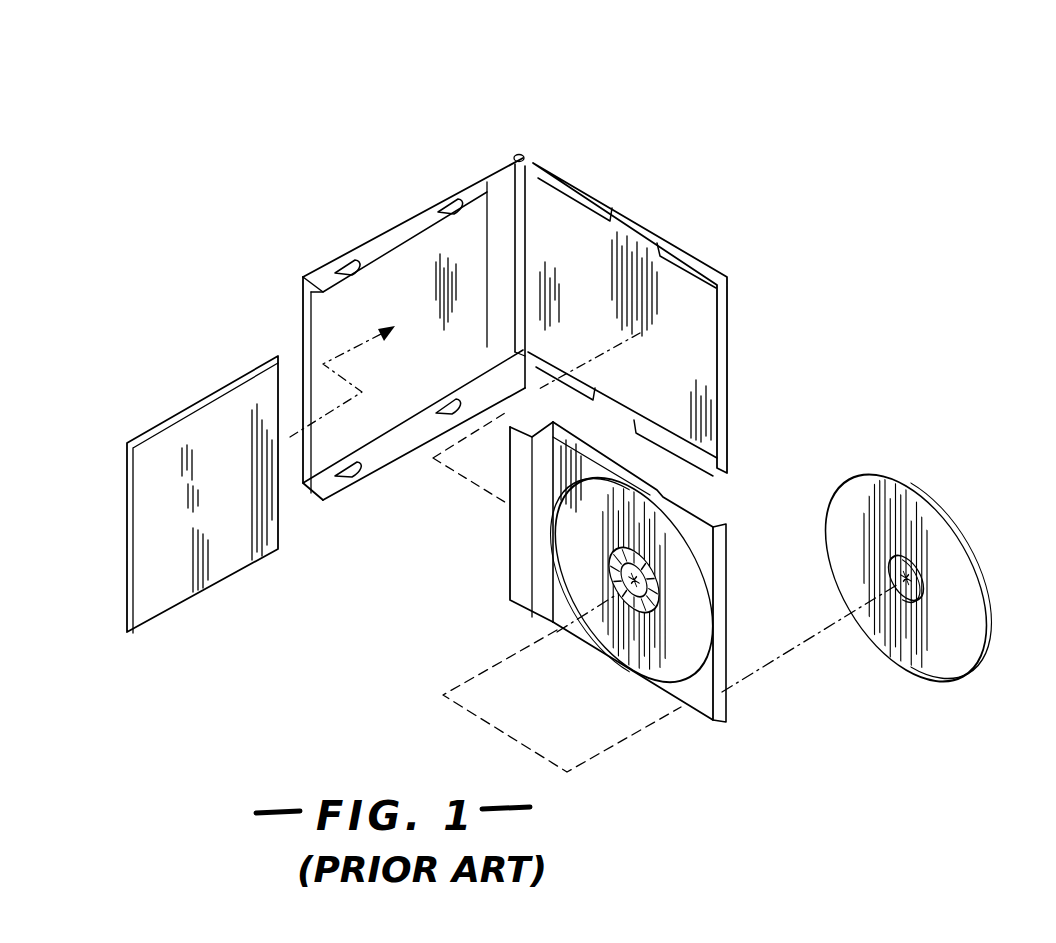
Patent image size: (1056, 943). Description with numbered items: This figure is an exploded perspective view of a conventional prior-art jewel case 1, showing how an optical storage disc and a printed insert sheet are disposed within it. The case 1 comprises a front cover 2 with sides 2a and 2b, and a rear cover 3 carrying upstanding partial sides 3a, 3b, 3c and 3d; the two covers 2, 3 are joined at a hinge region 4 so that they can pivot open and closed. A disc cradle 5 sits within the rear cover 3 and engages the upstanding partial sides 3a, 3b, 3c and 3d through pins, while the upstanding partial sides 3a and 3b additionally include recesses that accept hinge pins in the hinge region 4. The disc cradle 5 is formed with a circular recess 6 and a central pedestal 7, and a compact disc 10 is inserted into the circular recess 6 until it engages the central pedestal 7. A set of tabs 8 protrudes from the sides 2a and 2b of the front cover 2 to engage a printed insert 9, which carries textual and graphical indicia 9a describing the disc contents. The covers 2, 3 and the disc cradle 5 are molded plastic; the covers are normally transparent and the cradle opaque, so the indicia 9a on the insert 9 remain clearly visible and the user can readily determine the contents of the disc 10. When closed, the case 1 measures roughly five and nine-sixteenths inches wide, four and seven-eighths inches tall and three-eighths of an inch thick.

The jewel case 1 is at (452, 93).
The front cover 2 is at (327, 317).
The side of front cover 2a is at (393, 230).
The side of front cover 2b is at (397, 437).
The rear cover 3 is at (598, 193).
The upstanding partial side 3a is at (570, 187).
The upstanding partial side 3b is at (555, 373).
The upstanding partial side 3c is at (687, 255).
The upstanding partial side 3d is at (680, 447).
The hinge region 4 is at (521, 152).
The disc cradle 5 is at (700, 538).
The circular recess 6 is at (693, 602).
The central pedestal 7 is at (616, 568).
The tabs 8 is at (342, 262).
The printed insert 9 is at (228, 543).
The indicia 9a is at (183, 520).
The compact disc 10 is at (927, 548).